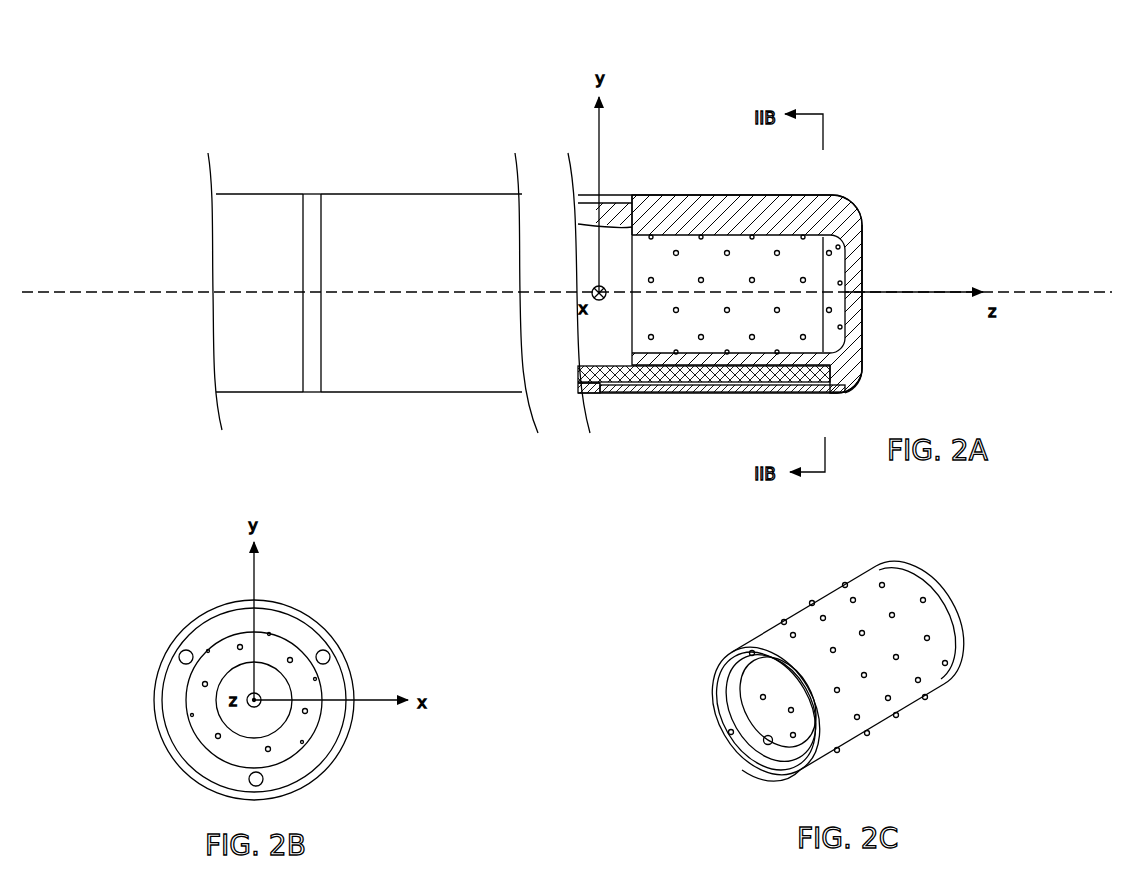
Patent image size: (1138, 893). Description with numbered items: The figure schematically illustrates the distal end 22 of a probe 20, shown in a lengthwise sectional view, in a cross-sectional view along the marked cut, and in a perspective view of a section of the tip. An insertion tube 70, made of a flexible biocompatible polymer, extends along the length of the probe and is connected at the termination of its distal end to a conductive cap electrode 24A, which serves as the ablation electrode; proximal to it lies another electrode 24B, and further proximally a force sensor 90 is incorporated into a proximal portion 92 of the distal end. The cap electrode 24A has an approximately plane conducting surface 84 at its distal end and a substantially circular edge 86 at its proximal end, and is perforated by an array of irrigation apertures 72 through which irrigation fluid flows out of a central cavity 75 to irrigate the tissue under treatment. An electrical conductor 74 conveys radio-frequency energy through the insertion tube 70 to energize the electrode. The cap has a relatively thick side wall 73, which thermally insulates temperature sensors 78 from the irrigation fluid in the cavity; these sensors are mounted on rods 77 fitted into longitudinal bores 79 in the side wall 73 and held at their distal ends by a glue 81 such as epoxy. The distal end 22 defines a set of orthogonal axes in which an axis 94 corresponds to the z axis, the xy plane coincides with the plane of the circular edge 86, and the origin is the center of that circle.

In FIG. 2A, the probe 20 is at (260, 193).
In FIG. 2A, the distal end 22 is at (398, 109).
In FIG. 2A, the conductive cap electrode 24A is at (673, 195).
In FIG. 2B, the conductive cap electrode 24A is at (307, 613).
In FIG. 2C, the conductive cap electrode 24A is at (797, 610).
In FIG. 2A, the electrode 24B is at (308, 193).
In FIG. 2A, the insertion tube 70 is at (263, 393).
In FIG. 2A, the irrigation apertures 72 is at (727, 310).
In FIG. 2B, the irrigation apertures 72 is at (240, 762).
In FIG. 2C, the irrigation apertures 72 is at (895, 613).
In FIG. 2A, the side wall 73 is at (720, 205).
In FIG. 2B, the side wall 73 is at (337, 683).
In FIG. 2C, the side wall 73 is at (740, 697).
In FIG. 2A, the electrical conductor 74 is at (622, 203).
In FIG. 2B, the central cavity 75 is at (266, 730).
In FIG. 2A, the rods 77 is at (733, 383).
In FIG. 2A, the temperature sensors 78 is at (658, 392).
In FIG. 2B, the longitudinal bores 79 is at (178, 663).
In FIG. 2C, the longitudinal bores 79 is at (763, 743).
In FIG. 2A, the glue 81 is at (848, 394).
In FIG. 2A, the plane conducting surface 84 is at (862, 247).
In FIG. 2A, the circular edge 86 is at (596, 395).
In FIG. 2C, the circular edge 86 is at (790, 777).
In FIG. 2A, the force sensor 90 is at (410, 432).
In FIG. 2A, the proximal portion 92 is at (231, 193).
In FIG. 2A, the axis 94 is at (50, 293).